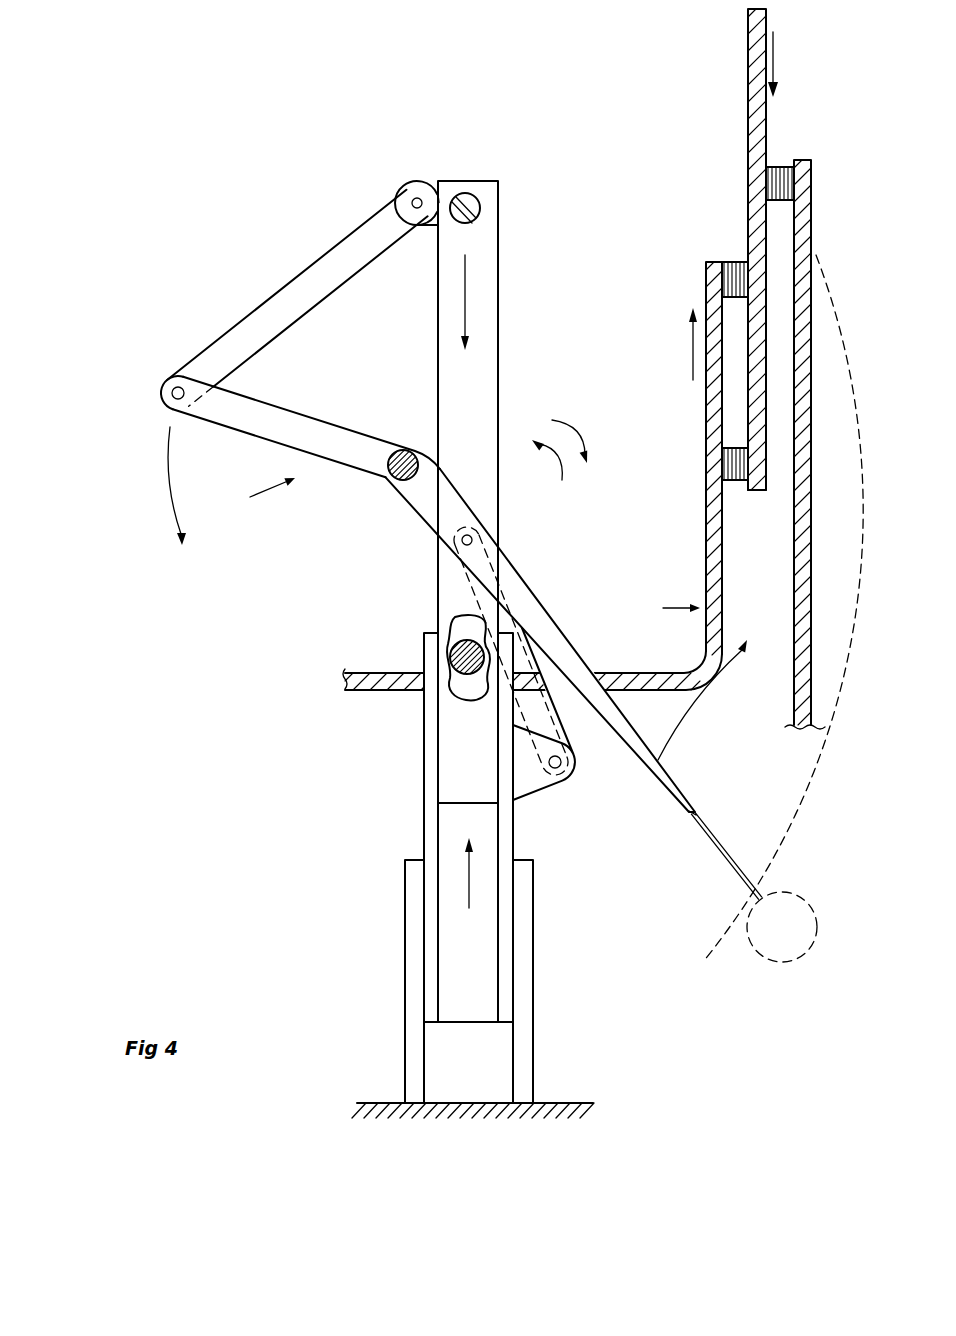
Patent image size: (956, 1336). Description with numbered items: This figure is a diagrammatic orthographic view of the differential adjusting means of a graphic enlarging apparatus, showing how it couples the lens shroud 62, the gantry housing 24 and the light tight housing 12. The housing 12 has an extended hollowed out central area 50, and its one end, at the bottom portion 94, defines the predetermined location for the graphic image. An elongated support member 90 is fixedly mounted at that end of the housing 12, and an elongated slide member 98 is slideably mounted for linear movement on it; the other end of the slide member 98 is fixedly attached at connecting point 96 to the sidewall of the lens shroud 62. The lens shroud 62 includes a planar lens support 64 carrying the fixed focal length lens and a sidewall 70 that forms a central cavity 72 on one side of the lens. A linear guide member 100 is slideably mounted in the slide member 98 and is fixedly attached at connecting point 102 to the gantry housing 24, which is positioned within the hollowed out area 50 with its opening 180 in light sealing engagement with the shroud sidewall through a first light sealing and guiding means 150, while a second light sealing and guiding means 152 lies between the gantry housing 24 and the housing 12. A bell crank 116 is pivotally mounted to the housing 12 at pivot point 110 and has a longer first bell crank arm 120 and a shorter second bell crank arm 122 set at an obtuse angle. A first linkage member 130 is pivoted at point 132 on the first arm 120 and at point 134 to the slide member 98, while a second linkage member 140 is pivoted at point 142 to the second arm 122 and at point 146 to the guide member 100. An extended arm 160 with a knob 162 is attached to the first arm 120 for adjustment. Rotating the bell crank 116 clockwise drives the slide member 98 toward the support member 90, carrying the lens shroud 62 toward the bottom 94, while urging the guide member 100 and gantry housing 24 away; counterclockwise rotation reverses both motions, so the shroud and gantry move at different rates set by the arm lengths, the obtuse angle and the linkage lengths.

The light tight housing 12 is at (812, 240).
The gantry housing 24 is at (748, 66).
The hollowed out central area 50 is at (762, 812).
The lens shroud 62 is at (666, 608).
The planar lens support 64 is at (598, 673).
The sidewall 70 is at (706, 560).
The central cavity 72 is at (596, 528).
The elongated support member 90 is at (405, 908).
The bottom portion 94 is at (557, 1106).
The connecting point 96 is at (450, 657).
The elongated slide member 98 is at (424, 772).
The linear guide member 100 is at (488, 370).
The connecting point 102 is at (468, 195).
The pivot point 110 is at (390, 475).
The bell crank 116 is at (231, 486).
The first bell crank arm 120 is at (520, 595).
The second bell crank arm 122 is at (288, 412).
The first linkage member 130 is at (478, 600).
The pivot point 132 is at (462, 543).
The pivot point 134 is at (560, 765).
The second linkage member 140 is at (330, 265).
The pivot point 142 is at (170, 392).
The pivot point 146 is at (420, 198).
The first light sealing and guiding means 150 is at (735, 448).
The second light sealing and guiding means 152 is at (776, 167).
The extended arm 160 is at (715, 848).
The knob 162 is at (770, 947).
The opening 180 is at (762, 491).